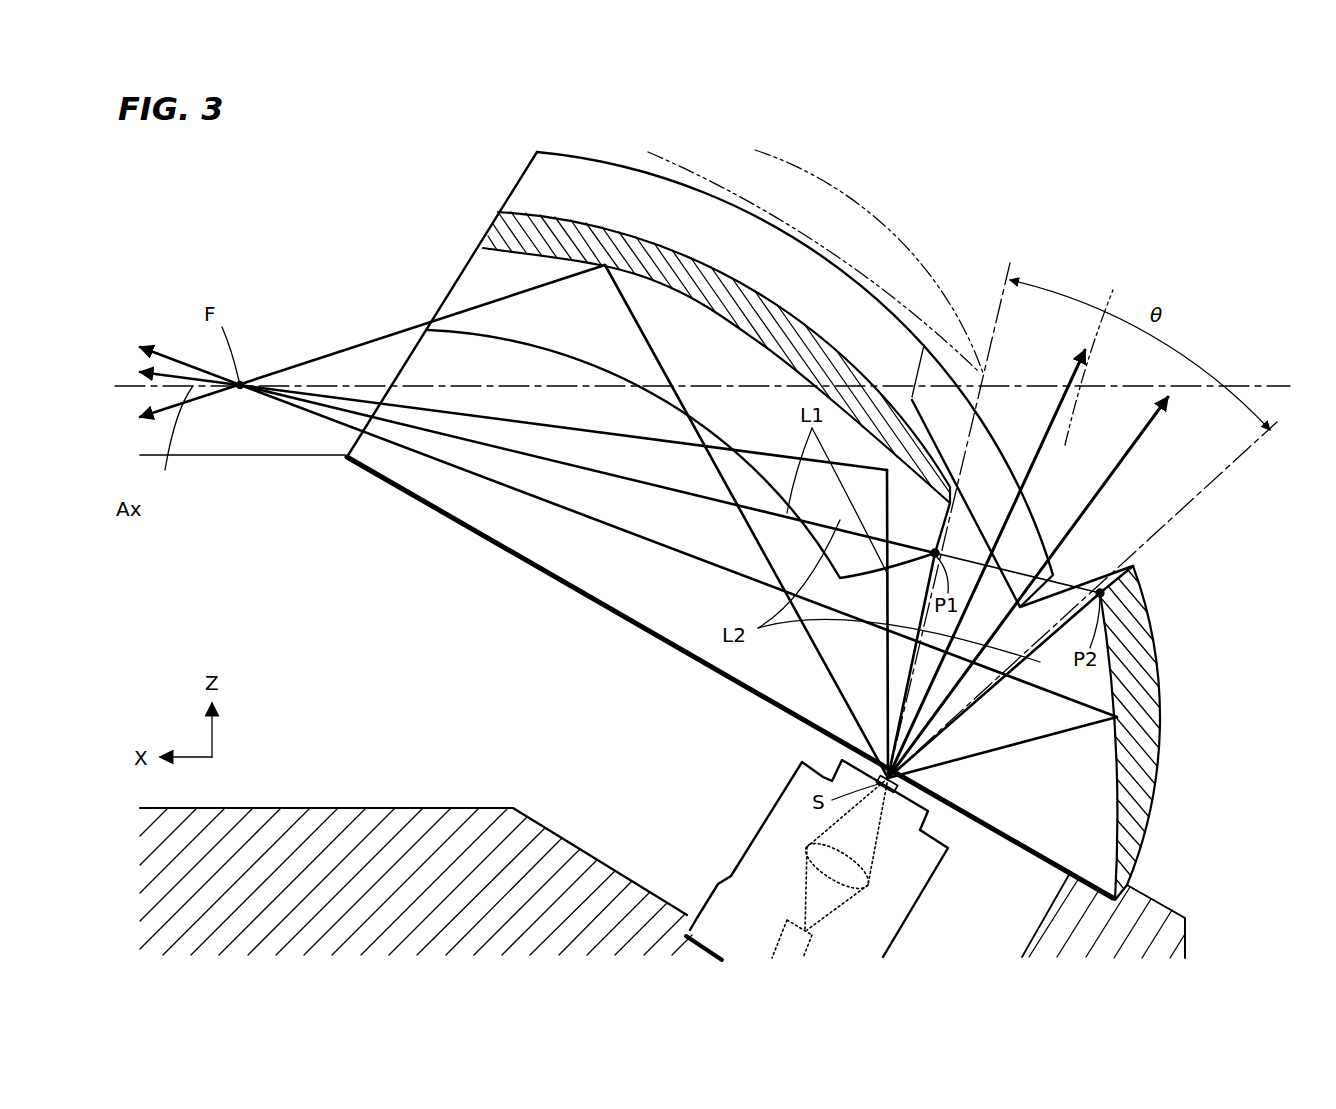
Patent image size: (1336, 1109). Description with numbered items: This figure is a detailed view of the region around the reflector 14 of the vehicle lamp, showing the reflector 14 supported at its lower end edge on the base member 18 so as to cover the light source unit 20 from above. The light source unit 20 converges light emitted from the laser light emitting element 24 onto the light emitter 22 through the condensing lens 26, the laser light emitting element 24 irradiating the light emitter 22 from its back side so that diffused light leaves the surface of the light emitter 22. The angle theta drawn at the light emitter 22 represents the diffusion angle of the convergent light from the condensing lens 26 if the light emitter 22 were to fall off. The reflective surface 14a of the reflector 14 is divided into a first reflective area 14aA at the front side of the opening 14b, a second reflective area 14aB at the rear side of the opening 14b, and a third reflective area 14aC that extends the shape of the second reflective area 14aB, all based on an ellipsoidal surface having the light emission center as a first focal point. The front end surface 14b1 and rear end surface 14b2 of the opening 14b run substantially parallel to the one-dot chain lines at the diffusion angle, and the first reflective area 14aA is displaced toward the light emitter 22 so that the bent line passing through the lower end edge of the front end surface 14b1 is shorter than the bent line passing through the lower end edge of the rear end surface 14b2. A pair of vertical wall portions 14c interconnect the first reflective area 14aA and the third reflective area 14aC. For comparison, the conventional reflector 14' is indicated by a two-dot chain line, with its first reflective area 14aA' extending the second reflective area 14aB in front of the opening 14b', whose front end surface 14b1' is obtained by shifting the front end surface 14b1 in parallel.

The reflector 14 is at (779, 525).
The reflector of the conventional vehicle lamp 14' is at (851, 261).
The reflective surface 14a is at (360, 515).
The first reflective area 14aA is at (657, 382).
The first reflective area of the conventional reflector 14aA' is at (758, 249).
The second reflective area 14aB is at (1117, 690).
The third reflective area 14aC is at (640, 560).
The opening 14b is at (1098, 657).
The opening of the conventional reflector 14b' is at (1210, 338).
The front end surface 14b1 is at (1062, 503).
The front end surface of the conventional opening 14b1' is at (1109, 355).
The rear end surface 14b2 is at (1113, 573).
The vertical wall portion 14c is at (857, 316).
The base member 18 is at (1160, 896).
The light source unit 20 is at (776, 806).
The light emitter 22 is at (900, 784).
The laser light emitting element 24 is at (813, 931).
The condensing lens 26 is at (807, 847).